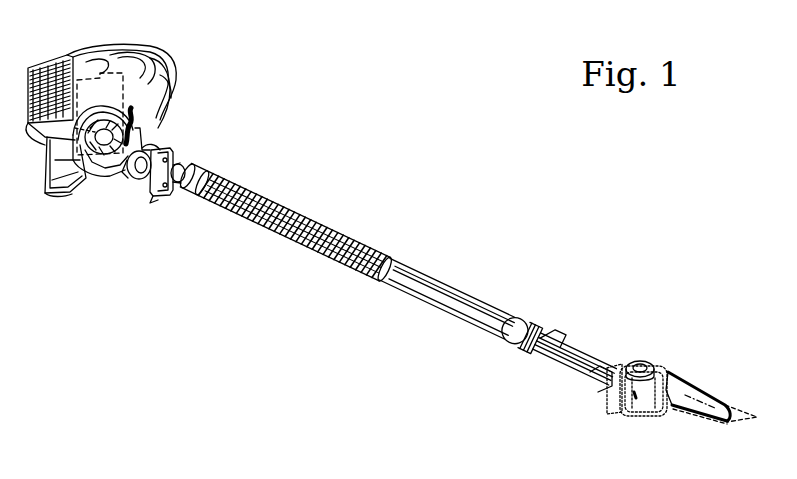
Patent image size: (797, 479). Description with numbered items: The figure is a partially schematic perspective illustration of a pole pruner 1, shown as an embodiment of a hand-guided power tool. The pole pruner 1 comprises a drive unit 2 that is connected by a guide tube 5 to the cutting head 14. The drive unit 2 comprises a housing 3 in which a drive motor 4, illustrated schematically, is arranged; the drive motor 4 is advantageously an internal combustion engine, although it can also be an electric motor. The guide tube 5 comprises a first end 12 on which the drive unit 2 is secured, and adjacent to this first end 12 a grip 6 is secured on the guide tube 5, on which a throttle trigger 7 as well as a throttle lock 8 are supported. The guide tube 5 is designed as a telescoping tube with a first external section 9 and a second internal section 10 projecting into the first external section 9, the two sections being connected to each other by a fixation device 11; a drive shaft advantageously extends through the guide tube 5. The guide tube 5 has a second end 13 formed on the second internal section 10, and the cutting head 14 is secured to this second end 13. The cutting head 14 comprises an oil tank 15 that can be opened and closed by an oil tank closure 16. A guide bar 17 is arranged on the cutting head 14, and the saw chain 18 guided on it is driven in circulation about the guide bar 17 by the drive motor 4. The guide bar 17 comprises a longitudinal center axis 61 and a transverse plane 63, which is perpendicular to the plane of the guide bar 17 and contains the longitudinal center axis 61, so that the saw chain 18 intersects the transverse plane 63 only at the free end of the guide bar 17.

The pole pruner 1 is at (421, 127).
The drive unit 2 is at (62, 197).
The housing 3 is at (75, 67).
The drive motor 4 is at (125, 88).
The guide tube 5 is at (435, 277).
The grip 6 is at (140, 162).
The throttle trigger 7 is at (157, 193).
The throttle lock 8 is at (150, 148).
The first external section 9 is at (398, 270).
The second internal section 10 is at (580, 357).
The fixation device 11 is at (524, 322).
The first end 12 is at (121, 165).
The second end 13 is at (594, 380).
The cutting head 14 is at (619, 404).
The oil tank 15 is at (640, 397).
The oil tank closure 16 is at (638, 366).
The guide bar 17 is at (680, 392).
The saw chain 18 is at (700, 384).
The longitudinal center axis 61 is at (718, 404).
The transverse plane 63 is at (703, 424).